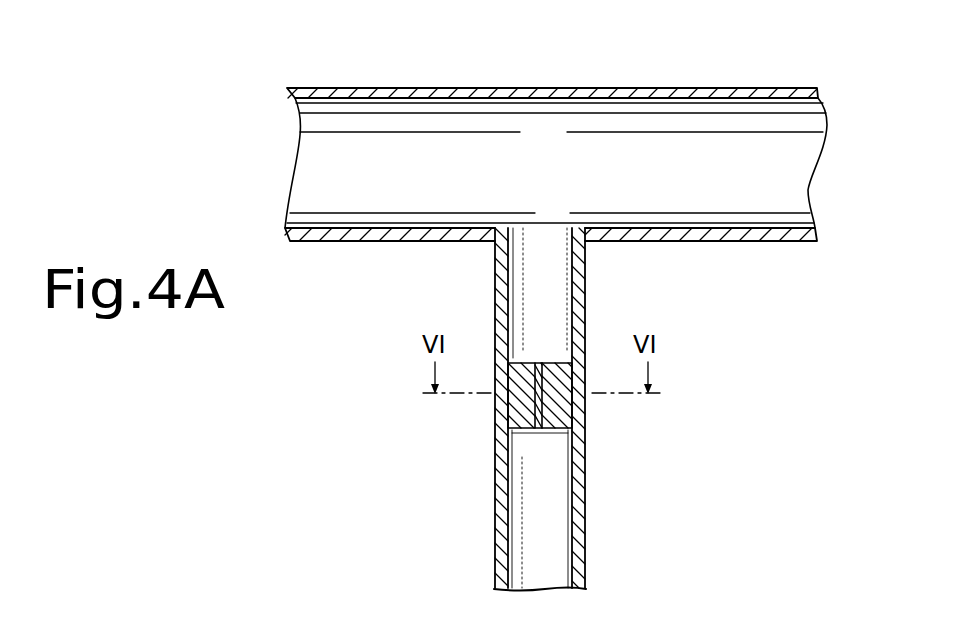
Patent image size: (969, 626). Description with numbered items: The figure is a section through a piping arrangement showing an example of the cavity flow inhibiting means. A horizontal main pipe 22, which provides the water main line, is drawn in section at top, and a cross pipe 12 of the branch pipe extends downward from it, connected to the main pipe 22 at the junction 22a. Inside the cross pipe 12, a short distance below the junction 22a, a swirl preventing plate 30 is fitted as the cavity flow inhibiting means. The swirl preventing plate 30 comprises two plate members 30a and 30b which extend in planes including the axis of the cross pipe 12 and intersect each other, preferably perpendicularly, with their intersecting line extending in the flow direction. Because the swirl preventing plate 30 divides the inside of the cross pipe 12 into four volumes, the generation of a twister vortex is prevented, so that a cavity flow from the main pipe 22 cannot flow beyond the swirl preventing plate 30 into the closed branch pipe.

The main pipe 22 is at (712, 87).
The junction 22a is at (512, 237).
The cross pipe 12 is at (585, 287).
The swirl preventing plate 30 is at (494, 411).
The plate member 30a is at (538, 368).
The plate member 30b is at (563, 410).